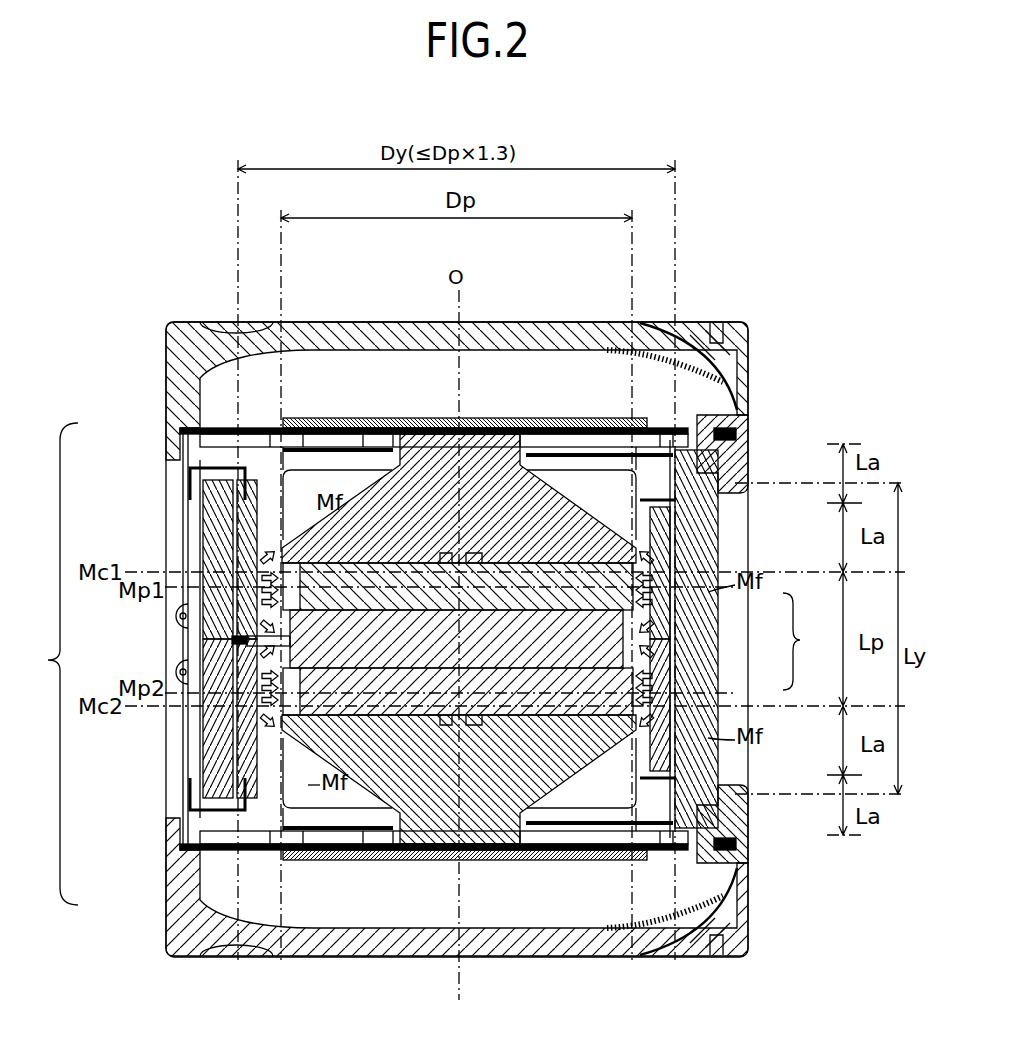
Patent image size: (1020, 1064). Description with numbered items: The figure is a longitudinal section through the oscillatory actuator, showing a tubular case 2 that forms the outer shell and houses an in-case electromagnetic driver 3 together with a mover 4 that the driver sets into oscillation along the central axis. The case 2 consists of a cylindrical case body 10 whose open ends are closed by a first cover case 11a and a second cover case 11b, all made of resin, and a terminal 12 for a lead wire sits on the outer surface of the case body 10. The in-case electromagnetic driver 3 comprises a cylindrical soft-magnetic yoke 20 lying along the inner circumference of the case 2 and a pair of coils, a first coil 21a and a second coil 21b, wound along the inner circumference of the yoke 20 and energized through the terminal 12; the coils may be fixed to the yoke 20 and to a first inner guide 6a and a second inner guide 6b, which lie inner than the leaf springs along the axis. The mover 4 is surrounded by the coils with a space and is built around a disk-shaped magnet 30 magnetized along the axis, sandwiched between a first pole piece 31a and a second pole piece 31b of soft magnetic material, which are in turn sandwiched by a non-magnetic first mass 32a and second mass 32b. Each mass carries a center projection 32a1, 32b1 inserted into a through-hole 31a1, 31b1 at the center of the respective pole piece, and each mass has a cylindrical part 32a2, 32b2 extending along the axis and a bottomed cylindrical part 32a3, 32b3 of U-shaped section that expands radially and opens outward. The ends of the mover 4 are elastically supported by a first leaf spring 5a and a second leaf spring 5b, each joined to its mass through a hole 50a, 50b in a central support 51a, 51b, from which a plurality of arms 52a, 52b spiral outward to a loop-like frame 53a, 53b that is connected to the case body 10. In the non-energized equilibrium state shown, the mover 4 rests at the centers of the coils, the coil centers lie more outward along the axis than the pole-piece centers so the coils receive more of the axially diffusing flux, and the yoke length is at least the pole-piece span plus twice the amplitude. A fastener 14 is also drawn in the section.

The case 2 is at (149, 339).
The in-case electromagnetic driver 3 is at (803, 641).
The mover 4 is at (48, 662).
The first leaf spring 5a is at (667, 412).
The second leaf spring 5b is at (582, 883).
The first inner guide 6a is at (737, 440).
The second inner guide 6b is at (737, 835).
The case body 10 is at (720, 548).
The first cover case 11a is at (748, 380).
The second cover case 11b is at (748, 896).
The terminal 12 is at (185, 742).
The fastener 14 is at (712, 851).
The yoke 20 is at (690, 642).
The first coil 21a is at (690, 608).
The second coil 21b is at (690, 676).
The magnet 30 is at (232, 640).
The first pole piece 31a is at (200, 552).
The second pole piece 31b is at (200, 778).
The through-hole 31a1 is at (337, 496).
The through-hole 31b1 is at (337, 784).
The first mass 32a is at (187, 482).
The second mass 32b is at (187, 830).
The center projection 32a1 is at (528, 554).
The cylindrical part 32a2 is at (528, 520).
The bottomed cylindrical part 32a3 is at (683, 512).
The center projection 32b1 is at (581, 784).
The cylindrical part 32b2 is at (528, 805).
The bottomed cylindrical part 32b3 is at (683, 762).
The hole 50a is at (488, 418).
The hole 50b is at (480, 957).
The central support 51a is at (520, 418).
The central support 51b is at (527, 957).
The arms 52a is at (598, 432).
The arms 52b is at (640, 957).
The frame 53a is at (727, 425).
The frame 53b is at (735, 957).